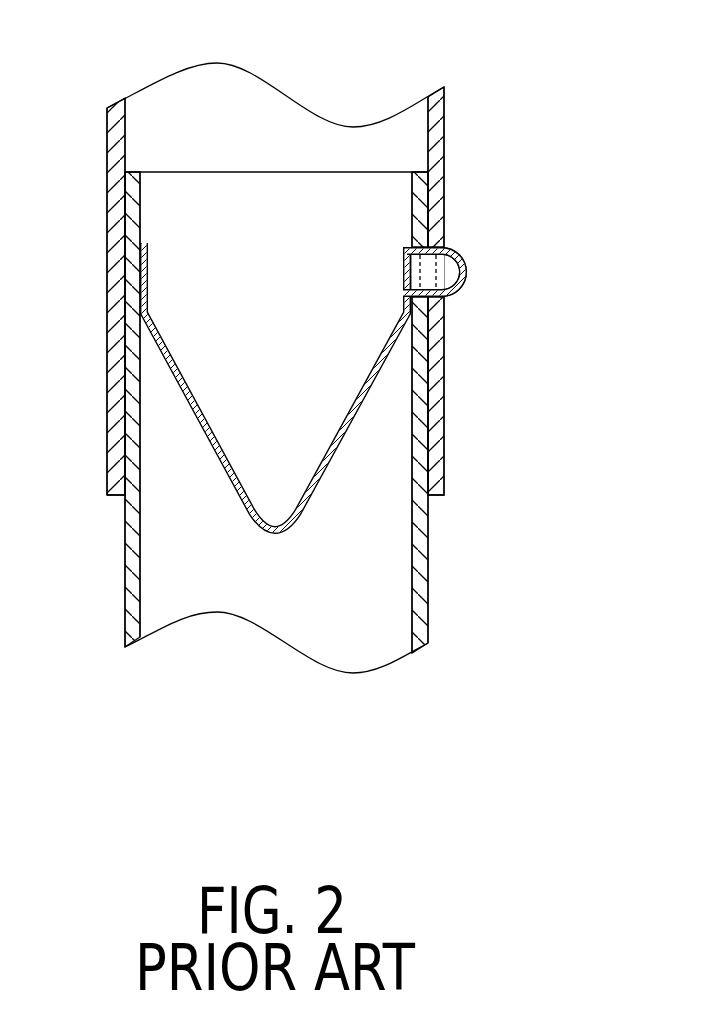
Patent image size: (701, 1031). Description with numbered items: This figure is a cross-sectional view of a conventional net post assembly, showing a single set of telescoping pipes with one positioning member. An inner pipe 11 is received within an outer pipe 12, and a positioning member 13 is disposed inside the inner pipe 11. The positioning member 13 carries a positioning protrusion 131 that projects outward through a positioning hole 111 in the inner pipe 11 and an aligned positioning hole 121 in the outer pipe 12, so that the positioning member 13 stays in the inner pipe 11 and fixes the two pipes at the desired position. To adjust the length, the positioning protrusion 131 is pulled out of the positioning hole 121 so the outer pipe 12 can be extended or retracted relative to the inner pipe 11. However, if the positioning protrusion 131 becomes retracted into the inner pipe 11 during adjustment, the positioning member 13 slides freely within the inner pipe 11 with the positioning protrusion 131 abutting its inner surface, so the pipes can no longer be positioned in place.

The inner pipe 11 is at (418, 605).
The outer pipe 12 is at (436, 128).
The positioning member 13 is at (207, 433).
The positioning hole 111 is at (405, 263).
The positioning hole 121 is at (438, 263).
The positioning protrusion 131 is at (463, 282).